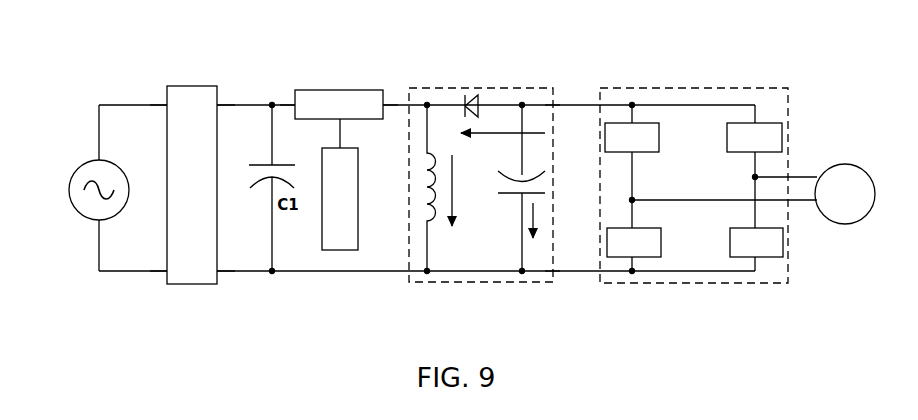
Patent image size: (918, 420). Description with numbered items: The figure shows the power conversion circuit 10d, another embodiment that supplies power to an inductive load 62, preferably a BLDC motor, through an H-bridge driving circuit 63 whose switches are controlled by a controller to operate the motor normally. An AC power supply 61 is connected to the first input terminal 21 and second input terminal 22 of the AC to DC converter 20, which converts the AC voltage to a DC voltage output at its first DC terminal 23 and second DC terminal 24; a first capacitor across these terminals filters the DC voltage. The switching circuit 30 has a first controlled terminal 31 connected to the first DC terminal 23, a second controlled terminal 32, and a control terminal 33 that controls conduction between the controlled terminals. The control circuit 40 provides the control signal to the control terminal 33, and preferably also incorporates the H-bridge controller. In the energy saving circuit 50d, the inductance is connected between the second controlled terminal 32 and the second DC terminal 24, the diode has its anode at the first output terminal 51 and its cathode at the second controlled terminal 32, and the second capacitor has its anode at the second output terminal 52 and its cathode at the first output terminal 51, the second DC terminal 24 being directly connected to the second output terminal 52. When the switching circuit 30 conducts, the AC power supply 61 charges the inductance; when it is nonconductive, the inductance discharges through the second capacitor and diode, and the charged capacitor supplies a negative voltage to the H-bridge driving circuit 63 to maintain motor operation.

The power conversion circuit 10d is at (577, 70).
The AC to DC converter 20 is at (185, 86).
The first input terminal 21 is at (153, 117).
The second input terminal 22 is at (153, 261).
The first DC terminal 23 is at (232, 117).
The second DC terminal 24 is at (232, 261).
The switching circuit 30 is at (328, 90).
The first controlled terminal 31 is at (282, 93).
The second controlled terminal 32 is at (394, 94).
The control terminal 33 is at (327, 133).
The control circuit 40 is at (358, 183).
The energy saving circuit 50d is at (430, 88).
The first output terminal 51 is at (561, 117).
The second output terminal 52 is at (561, 261).
The AC power supply 61 is at (71, 206).
The inductive load 62 is at (848, 164).
The H-bridge driving circuit 63 is at (729, 88).